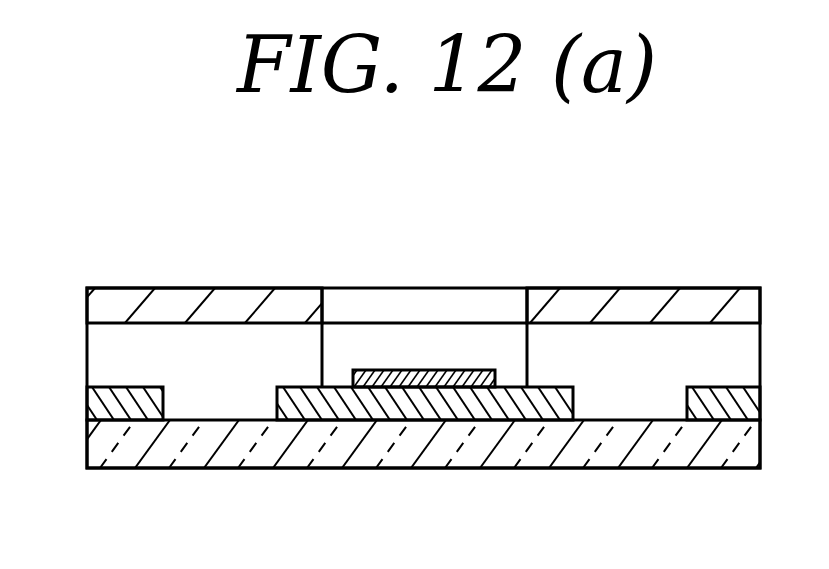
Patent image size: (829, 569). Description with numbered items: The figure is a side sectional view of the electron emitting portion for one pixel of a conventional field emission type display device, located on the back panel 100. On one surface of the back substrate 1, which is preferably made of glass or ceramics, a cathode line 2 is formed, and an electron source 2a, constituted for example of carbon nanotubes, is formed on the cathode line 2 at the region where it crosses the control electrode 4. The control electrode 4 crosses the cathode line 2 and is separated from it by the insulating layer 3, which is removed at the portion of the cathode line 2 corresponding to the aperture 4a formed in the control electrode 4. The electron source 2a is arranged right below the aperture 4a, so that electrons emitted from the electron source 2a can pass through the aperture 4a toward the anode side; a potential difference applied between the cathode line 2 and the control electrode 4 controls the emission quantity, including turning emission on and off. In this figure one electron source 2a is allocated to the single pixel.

The back panel 100 is at (139, 266).
The back substrate 1 is at (640, 453).
The cathode line 2 is at (312, 400).
The electron source 2a is at (412, 371).
The insulating layer 3 is at (232, 341).
The control electrode 4 is at (637, 297).
The aperture 4a is at (483, 300).